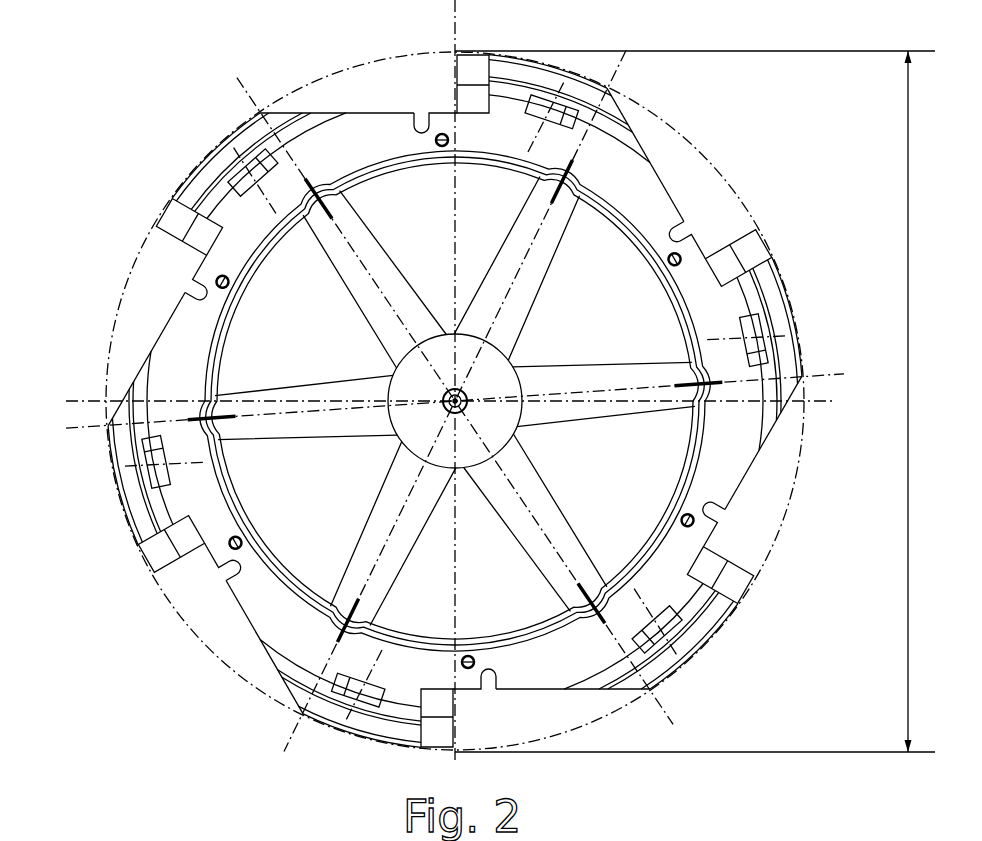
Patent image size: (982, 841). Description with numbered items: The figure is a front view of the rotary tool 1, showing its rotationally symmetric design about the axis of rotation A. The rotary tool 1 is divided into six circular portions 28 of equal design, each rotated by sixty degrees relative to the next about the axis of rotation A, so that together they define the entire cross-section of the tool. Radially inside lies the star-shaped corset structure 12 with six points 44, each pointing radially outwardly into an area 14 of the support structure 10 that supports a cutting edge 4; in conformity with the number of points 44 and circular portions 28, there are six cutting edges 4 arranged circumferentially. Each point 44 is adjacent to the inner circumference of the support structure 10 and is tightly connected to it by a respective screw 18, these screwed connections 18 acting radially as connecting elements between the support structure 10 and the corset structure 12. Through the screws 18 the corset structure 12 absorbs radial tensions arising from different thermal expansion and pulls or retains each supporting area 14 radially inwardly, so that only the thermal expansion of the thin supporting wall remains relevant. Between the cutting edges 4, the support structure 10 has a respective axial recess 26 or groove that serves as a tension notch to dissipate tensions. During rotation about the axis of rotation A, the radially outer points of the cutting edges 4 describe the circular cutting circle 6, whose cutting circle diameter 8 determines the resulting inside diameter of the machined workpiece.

The rotary tool 1 is at (145, 131).
The cutting edge 4 is at (165, 207).
The cutting circle 6 is at (688, 140).
The cutting circle diameter 8 is at (695, 401).
The support structure 10 is at (685, 168).
The corset structure 12 is at (563, 293).
The supporting area 14 is at (443, 108).
The screw 18 is at (553, 181).
The recess 26 is at (424, 115).
The circular portion 28 is at (390, 535).
The point 44 is at (537, 502).
The axis of rotation A is at (452, 400).